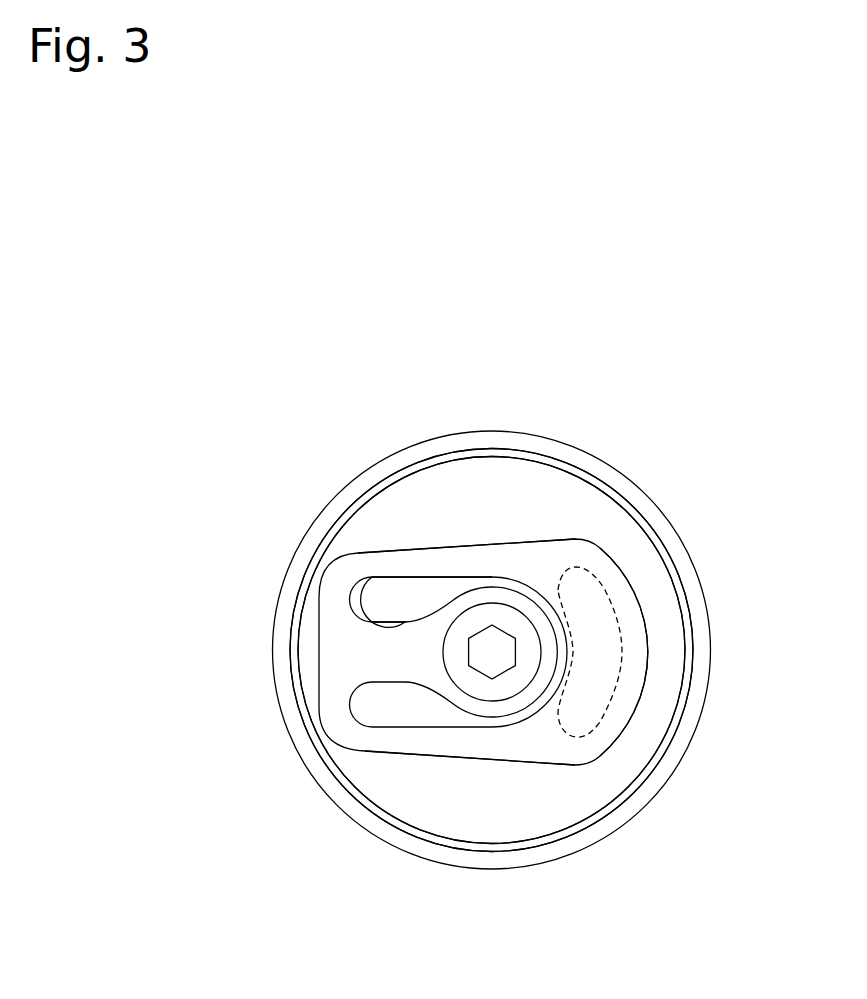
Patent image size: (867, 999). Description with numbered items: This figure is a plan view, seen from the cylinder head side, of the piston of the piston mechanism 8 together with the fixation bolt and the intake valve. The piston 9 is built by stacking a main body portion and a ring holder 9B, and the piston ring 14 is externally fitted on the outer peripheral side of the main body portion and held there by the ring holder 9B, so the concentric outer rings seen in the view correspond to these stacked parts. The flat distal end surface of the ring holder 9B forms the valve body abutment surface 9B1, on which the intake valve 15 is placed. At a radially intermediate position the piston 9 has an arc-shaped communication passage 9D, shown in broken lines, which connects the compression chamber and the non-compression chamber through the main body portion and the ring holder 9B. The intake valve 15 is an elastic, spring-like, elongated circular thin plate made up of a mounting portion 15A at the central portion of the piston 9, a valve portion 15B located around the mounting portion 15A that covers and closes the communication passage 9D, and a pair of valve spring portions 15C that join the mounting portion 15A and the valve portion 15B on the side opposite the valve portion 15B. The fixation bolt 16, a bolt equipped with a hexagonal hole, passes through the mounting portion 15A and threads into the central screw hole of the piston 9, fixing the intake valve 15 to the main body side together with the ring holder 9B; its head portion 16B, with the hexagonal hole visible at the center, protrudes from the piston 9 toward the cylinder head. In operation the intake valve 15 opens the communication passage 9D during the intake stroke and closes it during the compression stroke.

The piston mechanism 8 is at (515, 433).
The piston 9 is at (490, 823).
The ring holder 9B is at (540, 805).
The valve body abutment surface 9B1 is at (402, 515).
The communication passage 9D is at (622, 647).
The piston ring 14 is at (342, 800).
The intake valve 15 is at (582, 557).
The mounting portion 15A is at (483, 708).
The valve portion 15B is at (622, 702).
The valve spring portions 15C is at (443, 560).
The fixation bolt 16 is at (455, 649).
The head portion 16B is at (463, 630).